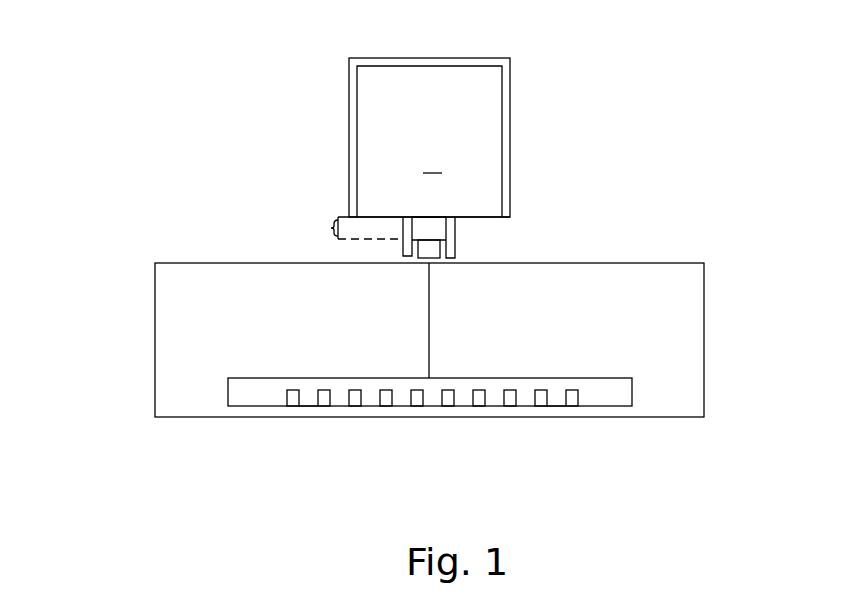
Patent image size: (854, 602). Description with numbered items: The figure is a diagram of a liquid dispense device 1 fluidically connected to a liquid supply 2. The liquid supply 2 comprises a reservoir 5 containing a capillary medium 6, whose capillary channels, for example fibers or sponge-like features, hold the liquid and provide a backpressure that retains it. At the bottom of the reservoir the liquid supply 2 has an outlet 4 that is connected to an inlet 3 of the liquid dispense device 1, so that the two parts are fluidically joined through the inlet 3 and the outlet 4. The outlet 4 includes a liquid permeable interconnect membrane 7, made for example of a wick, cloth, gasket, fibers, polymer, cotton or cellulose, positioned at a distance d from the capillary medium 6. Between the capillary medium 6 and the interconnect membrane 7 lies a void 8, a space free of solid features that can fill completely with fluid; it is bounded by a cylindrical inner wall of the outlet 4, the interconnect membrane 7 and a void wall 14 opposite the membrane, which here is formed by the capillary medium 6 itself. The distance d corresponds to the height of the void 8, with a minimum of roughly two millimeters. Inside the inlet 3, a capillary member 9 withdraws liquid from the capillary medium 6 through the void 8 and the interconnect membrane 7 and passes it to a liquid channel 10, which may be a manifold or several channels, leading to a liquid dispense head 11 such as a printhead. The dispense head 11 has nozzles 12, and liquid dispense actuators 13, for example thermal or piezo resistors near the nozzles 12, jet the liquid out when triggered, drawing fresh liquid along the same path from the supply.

The liquid dispense device 1 is at (704, 313).
The liquid supply 2 is at (349, 135).
The inlet 3 is at (402, 256).
The outlet 4 is at (457, 230).
The reservoir 5 is at (349, 68).
The capillary medium 6 is at (432, 160).
The interconnect membrane 7 is at (457, 240).
The void 8 is at (437, 225).
The capillary member 9 is at (425, 253).
The liquid channel 10 is at (429, 305).
The liquid dispense head 11 is at (623, 392).
The nozzles 12 is at (512, 412).
The liquid dispense actuators 13 is at (505, 404).
The void wall 14 is at (420, 215).
The distance d is at (331, 228).